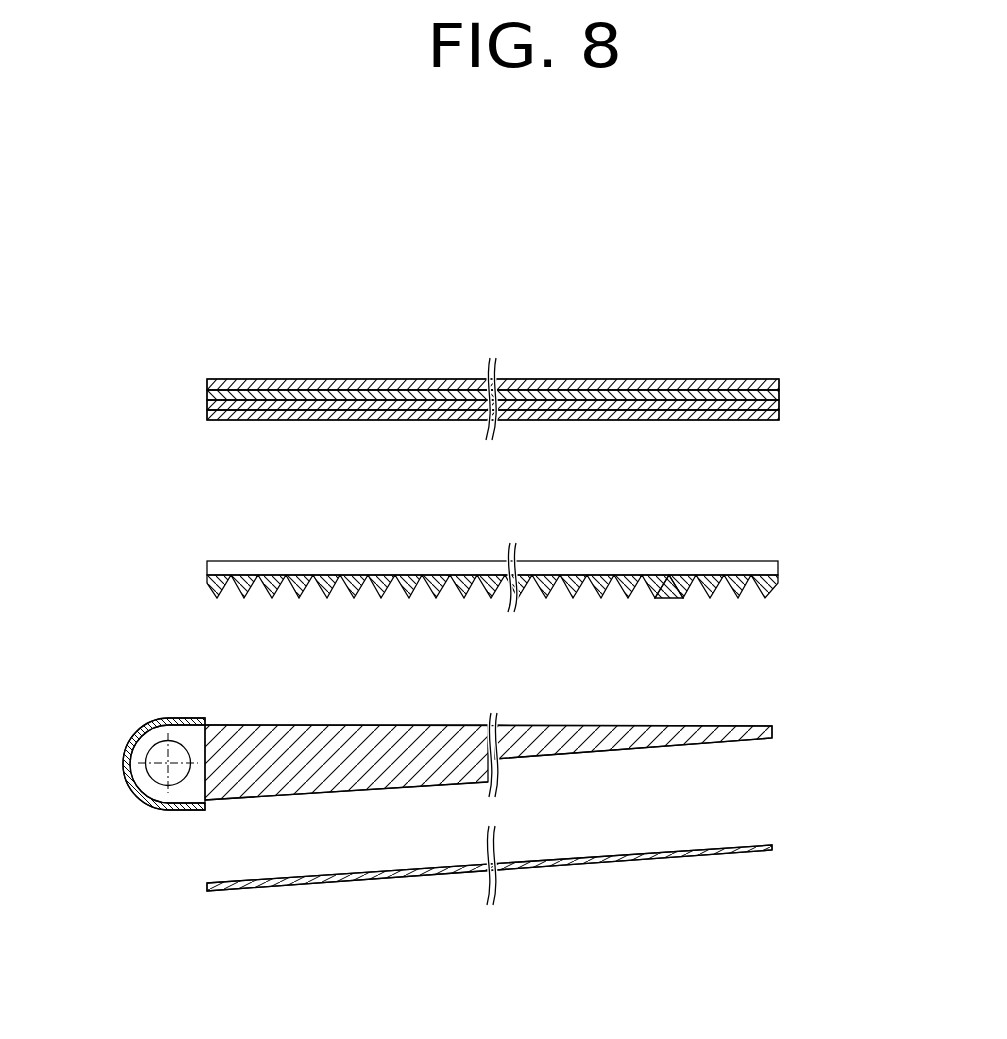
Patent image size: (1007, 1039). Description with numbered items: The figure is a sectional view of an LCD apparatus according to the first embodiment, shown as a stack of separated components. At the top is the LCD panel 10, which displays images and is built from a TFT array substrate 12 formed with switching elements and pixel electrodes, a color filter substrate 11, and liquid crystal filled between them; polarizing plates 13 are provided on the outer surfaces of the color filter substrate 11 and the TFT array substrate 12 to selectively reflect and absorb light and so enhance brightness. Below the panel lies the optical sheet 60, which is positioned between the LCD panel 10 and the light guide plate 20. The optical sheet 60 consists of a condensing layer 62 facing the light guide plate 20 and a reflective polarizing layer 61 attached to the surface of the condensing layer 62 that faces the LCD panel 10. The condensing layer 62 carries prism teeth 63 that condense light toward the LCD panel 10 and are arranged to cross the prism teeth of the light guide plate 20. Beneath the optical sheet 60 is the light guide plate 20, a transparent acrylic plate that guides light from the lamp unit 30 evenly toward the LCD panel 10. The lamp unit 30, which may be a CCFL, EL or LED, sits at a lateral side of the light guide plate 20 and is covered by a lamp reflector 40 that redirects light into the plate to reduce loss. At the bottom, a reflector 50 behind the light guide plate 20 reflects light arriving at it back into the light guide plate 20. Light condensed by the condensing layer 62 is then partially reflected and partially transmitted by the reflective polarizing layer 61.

The LCD panel 10 is at (575, 399).
The color filter substrate 11 is at (779, 391).
The TFT array substrate 12 is at (544, 421).
The polarizing plates 13 is at (779, 383).
The light guide plate 20 is at (775, 727).
The lamp unit 30 is at (145, 805).
The lamp reflector 40 is at (122, 750).
The reflector 50 is at (775, 846).
The optical sheet 60 is at (569, 602).
The reflective polarizing layer 61 is at (779, 563).
The condensing layer 62 is at (779, 580).
The prism teeth 63 is at (667, 598).